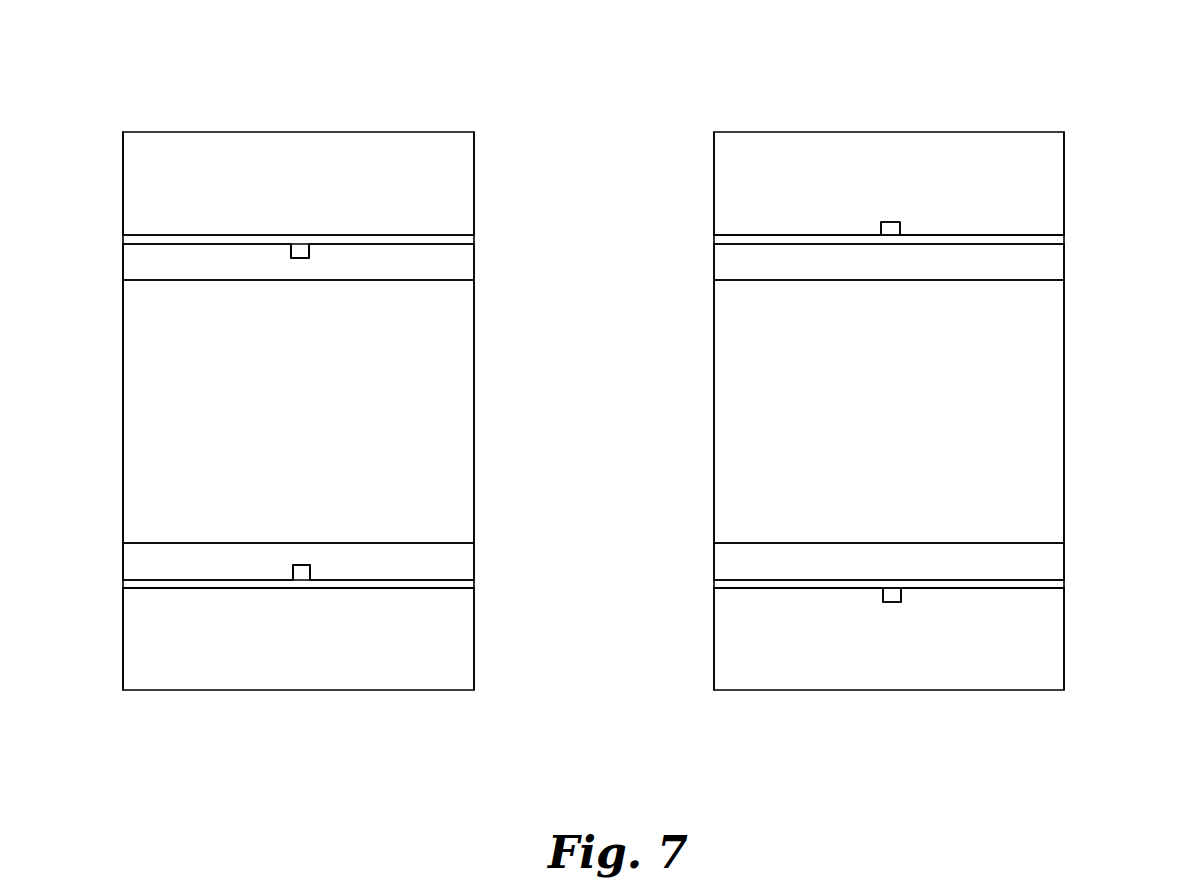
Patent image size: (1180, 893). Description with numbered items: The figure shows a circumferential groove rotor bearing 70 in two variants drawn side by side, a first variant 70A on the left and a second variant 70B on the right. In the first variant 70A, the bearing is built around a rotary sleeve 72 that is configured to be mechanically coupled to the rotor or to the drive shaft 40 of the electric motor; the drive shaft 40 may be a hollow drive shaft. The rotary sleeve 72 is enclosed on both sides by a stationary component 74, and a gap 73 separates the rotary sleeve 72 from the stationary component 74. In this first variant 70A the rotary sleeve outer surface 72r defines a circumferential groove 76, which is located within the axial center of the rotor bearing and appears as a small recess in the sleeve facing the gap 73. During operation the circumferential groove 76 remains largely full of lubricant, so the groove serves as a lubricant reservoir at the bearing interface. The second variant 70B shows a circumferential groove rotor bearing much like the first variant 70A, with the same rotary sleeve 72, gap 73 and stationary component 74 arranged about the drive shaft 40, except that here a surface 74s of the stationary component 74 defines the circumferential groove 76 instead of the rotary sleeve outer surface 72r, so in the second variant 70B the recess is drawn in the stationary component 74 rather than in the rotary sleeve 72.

The circumferential groove rotor bearing 70 is at (657, 38).
The sub-figure 70A is at (153, 703).
The sub-figure 70B is at (744, 703).
The drive shaft 40 is at (110, 282).
The rotary sleeve 72 is at (132, 270).
The rotary sleeve outer surface 72r is at (447, 240).
The gap 73 is at (135, 240).
The stationary component 74 is at (148, 165).
The surface of stationary component 74s is at (147, 592).
The circumferential groove 76 is at (293, 247).